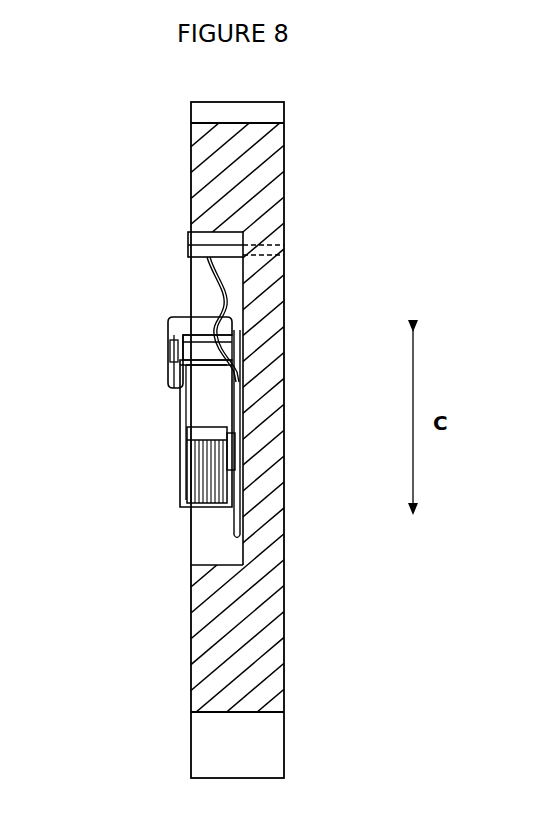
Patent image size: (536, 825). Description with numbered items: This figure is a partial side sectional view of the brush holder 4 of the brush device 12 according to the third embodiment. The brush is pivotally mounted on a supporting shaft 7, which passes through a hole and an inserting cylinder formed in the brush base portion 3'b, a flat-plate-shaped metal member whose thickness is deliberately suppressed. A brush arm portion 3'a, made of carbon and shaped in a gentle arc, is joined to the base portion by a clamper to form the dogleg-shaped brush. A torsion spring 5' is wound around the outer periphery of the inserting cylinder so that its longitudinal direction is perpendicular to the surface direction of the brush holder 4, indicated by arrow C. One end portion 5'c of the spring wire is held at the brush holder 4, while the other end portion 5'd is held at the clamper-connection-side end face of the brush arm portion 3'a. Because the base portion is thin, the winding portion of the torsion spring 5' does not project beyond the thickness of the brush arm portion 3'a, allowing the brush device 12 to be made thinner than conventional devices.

The brush holder 4 is at (230, 176).
The brush device 12 is at (318, 135).
The brush arm portion 3'a is at (146, 335).
The brush base portion 3'b is at (294, 397).
The end portion of wire member 5'd is at (146, 388).
The torsion spring 5' is at (152, 473).
The supporting shaft 7 is at (196, 460).
The end portion of wire member 5'c is at (303, 490).